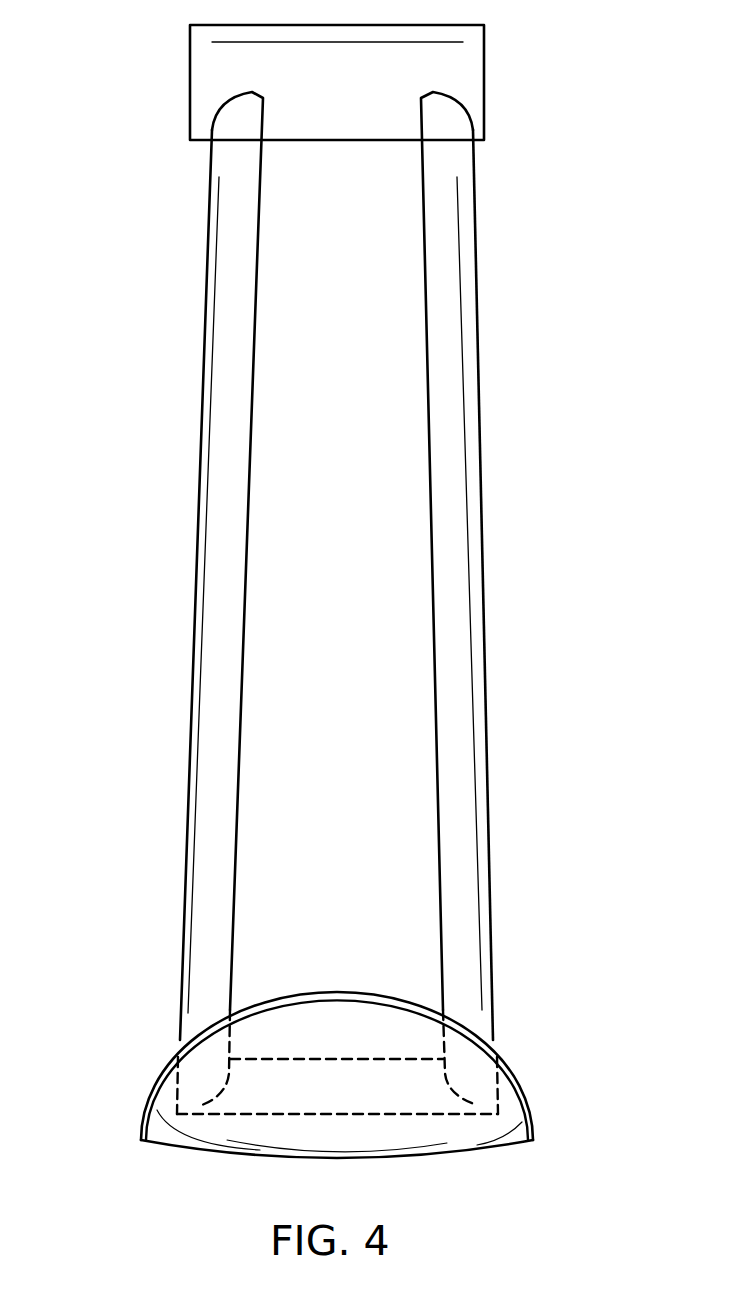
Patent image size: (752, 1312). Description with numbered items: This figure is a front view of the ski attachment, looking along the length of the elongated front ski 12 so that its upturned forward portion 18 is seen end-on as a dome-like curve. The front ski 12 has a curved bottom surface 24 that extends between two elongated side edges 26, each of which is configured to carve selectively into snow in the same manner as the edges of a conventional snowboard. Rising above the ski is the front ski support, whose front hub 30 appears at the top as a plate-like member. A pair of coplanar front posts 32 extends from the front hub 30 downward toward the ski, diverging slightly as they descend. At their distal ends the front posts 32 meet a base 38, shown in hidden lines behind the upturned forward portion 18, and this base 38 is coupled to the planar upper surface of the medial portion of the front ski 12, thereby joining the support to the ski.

The front ski 12 is at (530, 1078).
The upturned forward portion 18 is at (340, 990).
The curved bottom surface 24 is at (497, 1147).
The elongated side edges 26 is at (141, 1140).
The front hub 30 is at (345, 132).
The front posts 32 is at (207, 503).
The base 38 is at (417, 1103).